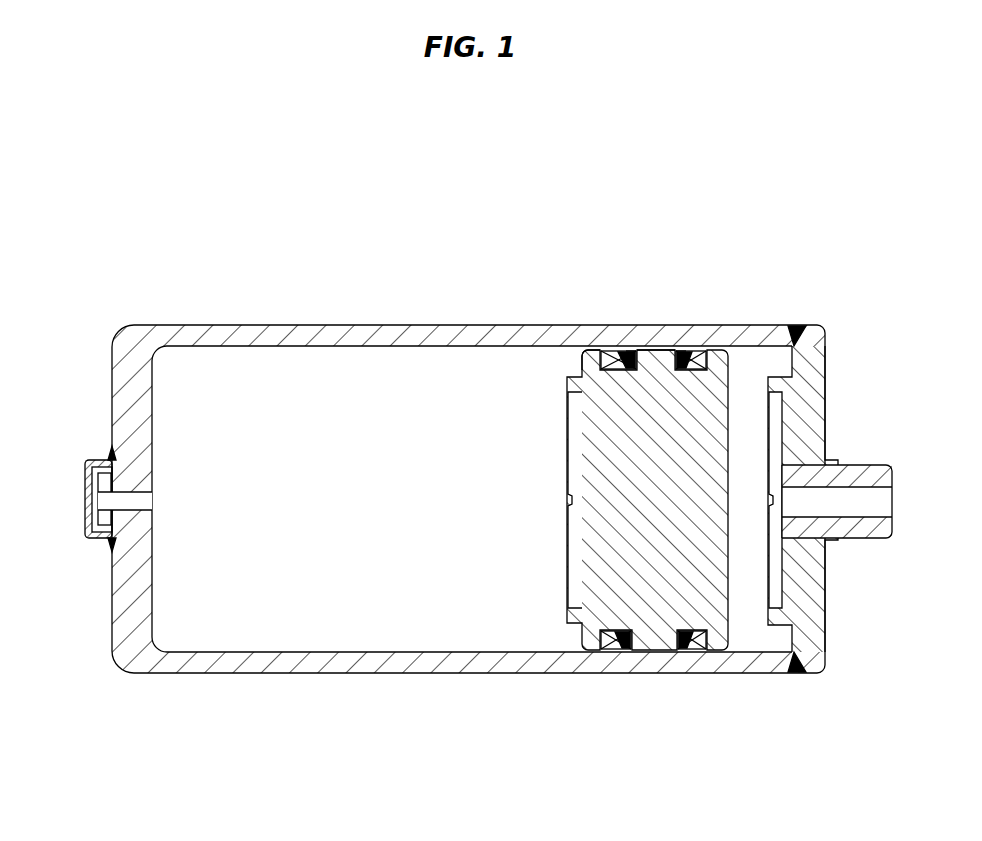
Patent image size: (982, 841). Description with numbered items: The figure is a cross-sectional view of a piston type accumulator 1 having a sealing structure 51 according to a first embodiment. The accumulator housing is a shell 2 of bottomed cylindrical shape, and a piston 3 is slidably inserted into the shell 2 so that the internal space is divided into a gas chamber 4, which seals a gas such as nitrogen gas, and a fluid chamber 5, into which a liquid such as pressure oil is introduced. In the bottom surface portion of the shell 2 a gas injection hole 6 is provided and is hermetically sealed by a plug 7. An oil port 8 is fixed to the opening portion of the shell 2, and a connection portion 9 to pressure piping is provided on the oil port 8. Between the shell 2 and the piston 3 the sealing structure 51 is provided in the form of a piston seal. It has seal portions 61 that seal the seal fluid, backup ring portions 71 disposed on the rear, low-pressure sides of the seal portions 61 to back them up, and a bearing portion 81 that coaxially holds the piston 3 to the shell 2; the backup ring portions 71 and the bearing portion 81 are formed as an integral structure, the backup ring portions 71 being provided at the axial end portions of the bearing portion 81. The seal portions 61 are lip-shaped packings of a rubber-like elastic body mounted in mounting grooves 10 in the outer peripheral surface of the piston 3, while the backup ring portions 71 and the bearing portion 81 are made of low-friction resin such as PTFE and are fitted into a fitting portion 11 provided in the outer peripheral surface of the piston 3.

The piston type accumulator 1 is at (182, 322).
The shell 2 is at (377, 660).
The piston 3 is at (651, 651).
The gas chamber 4 is at (388, 506).
The fluid chamber 5 is at (743, 511).
The sealing structure 51 is at (598, 348).
The gas injection hole 6 is at (105, 492).
The plug 7 is at (110, 508).
The oil port 8 is at (810, 420).
The connection portion 9 is at (870, 465).
The mounting grooves 10 is at (617, 653).
The fitting portion 11 is at (651, 607).
The seal portions 61 is at (612, 350).
The backup ring portions 71 is at (628, 350).
The bearing portion 81 is at (653, 350).